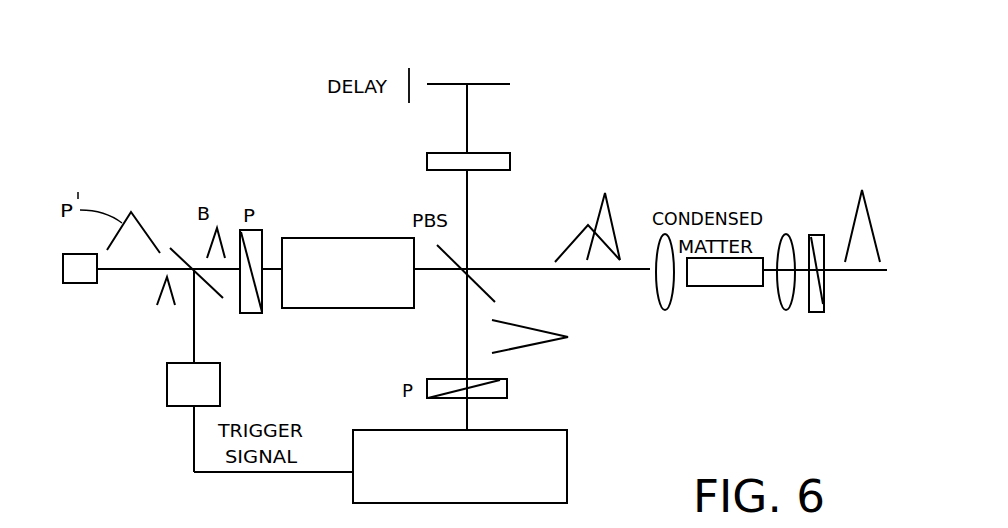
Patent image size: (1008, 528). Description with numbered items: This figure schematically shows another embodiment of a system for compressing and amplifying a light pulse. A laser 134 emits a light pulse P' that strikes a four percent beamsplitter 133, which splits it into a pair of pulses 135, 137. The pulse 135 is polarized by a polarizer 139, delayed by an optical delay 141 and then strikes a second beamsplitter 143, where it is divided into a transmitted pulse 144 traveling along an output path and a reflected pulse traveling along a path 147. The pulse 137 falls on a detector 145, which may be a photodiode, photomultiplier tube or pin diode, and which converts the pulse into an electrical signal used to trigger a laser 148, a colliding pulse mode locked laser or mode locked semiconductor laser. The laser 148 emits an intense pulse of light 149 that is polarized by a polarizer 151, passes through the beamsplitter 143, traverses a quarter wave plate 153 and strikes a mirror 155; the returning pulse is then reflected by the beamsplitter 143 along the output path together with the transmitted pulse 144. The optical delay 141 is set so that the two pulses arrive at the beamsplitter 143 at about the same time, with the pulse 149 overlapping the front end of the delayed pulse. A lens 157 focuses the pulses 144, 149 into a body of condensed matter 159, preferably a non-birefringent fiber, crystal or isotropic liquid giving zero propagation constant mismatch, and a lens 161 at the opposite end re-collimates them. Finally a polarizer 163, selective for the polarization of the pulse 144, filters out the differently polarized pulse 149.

The beamsplitter 133 is at (193, 258).
The laser 134 is at (93, 283).
The pulse 135 is at (222, 240).
The pulse 137 is at (160, 292).
The polarizer 139 is at (247, 313).
The optical delay 141 is at (367, 238).
The beamsplitter 143 is at (487, 290).
The transmitted pulse 144 is at (582, 233).
The detector 145 is at (222, 365).
The path 147 is at (465, 333).
The laser 148 is at (567, 464).
The pulse of light 149 is at (598, 205).
The polarizer 151 is at (510, 397).
The quarter wave plate 153 is at (483, 152).
The mirror 155 is at (458, 83).
The lens 157 is at (667, 308).
The condensed matter 159 is at (750, 286).
The lens 161 is at (785, 308).
The polarizer 163 is at (812, 312).